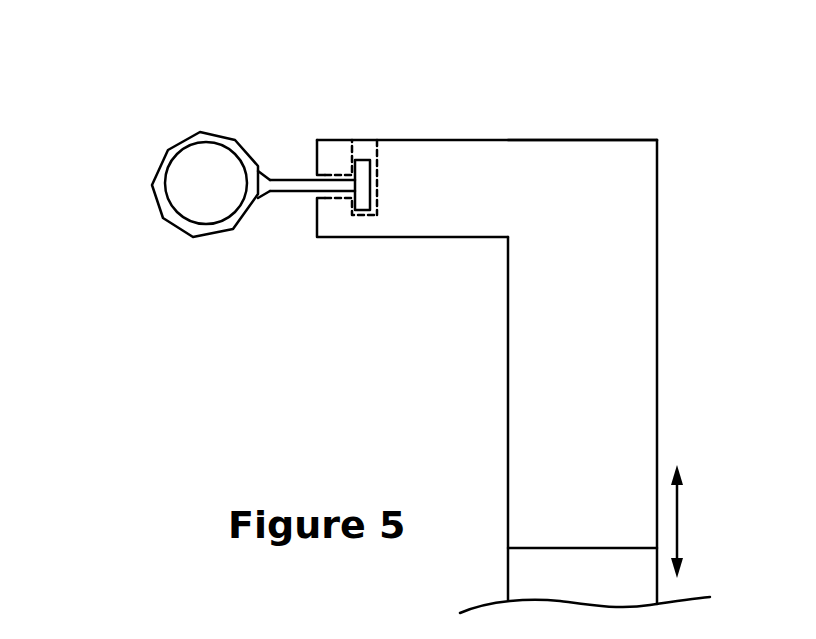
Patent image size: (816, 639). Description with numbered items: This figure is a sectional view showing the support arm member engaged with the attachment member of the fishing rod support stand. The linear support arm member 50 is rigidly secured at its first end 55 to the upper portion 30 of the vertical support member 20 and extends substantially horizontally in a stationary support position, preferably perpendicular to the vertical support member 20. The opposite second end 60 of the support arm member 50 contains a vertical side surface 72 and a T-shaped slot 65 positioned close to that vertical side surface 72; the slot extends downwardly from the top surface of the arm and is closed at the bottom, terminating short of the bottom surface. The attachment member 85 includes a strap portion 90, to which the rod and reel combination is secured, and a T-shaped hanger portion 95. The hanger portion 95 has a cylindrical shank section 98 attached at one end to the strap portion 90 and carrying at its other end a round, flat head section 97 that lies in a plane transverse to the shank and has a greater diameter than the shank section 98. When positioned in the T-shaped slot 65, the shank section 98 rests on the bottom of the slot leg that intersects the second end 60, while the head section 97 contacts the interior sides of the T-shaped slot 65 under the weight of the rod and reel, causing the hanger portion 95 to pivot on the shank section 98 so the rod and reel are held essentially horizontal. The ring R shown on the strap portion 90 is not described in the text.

The vertical support member 20 is at (458, 421).
The upper portion 30 is at (595, 335).
The linear support arm member 50 is at (510, 130).
The first end 55 is at (567, 160).
The second end 60 is at (372, 224).
The T-shaped slot 65 is at (366, 124).
The vertical side surface 72 is at (317, 173).
The attachment member 85 is at (200, 264).
The strap portion 90 is at (178, 140).
The T-shaped hanger portion 95 is at (295, 208).
The head section 97 is at (372, 165).
The shank section 98 is at (293, 181).
The ring R is at (190, 193).